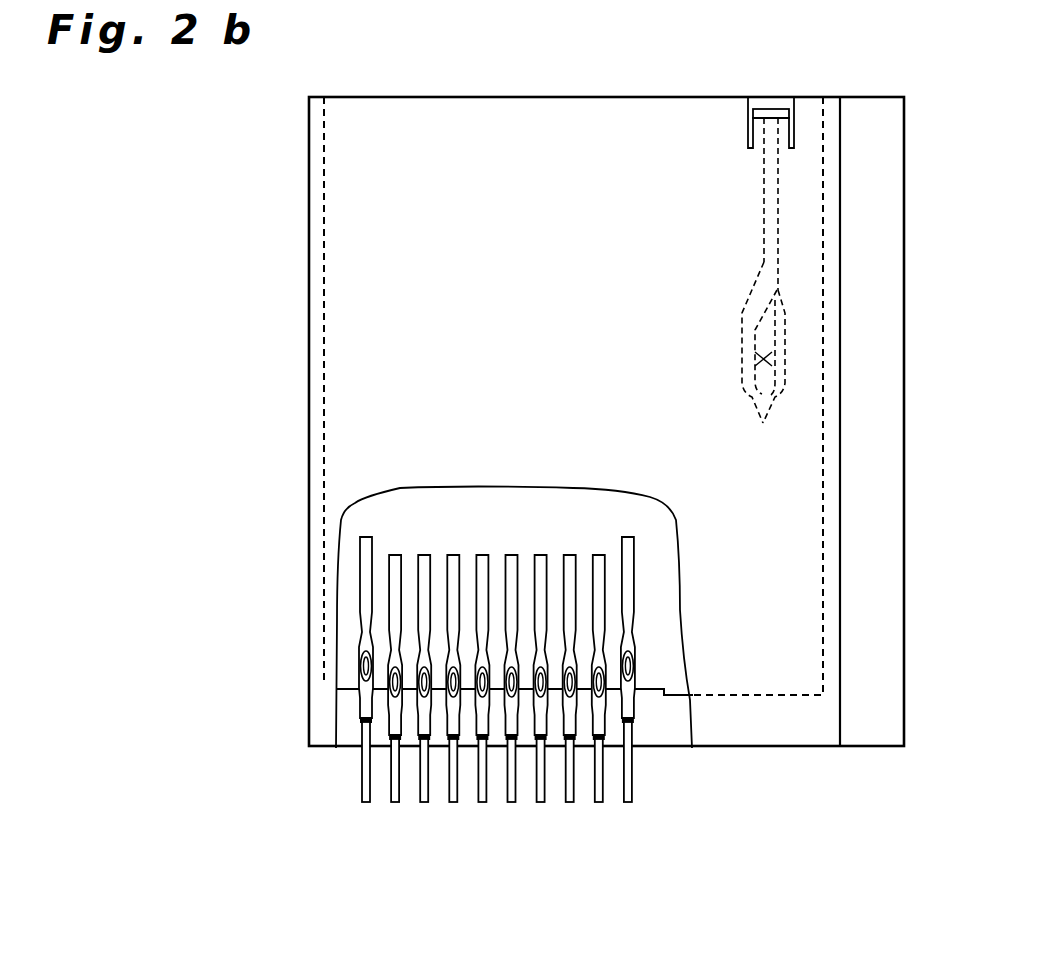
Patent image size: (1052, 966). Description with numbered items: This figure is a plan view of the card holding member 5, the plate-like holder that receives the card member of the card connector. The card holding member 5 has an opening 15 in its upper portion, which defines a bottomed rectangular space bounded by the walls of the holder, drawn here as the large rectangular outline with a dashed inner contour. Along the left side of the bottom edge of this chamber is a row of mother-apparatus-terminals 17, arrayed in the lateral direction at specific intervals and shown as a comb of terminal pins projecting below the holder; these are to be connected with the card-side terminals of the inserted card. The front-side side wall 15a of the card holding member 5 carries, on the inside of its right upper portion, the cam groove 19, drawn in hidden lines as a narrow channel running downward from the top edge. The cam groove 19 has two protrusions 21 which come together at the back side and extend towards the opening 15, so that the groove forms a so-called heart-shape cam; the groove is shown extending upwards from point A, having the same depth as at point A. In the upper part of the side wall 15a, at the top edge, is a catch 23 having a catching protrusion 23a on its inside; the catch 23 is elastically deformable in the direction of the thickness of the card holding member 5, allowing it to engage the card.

The card holding member 5 is at (884, 90).
The opening 15 is at (638, 118).
The side wall 15a is at (481, 118).
The mother-apparatus-terminals 17 is at (650, 800).
The cam groove 19 is at (752, 273).
The protrusions 21 is at (760, 379).
The catch 23 is at (763, 135).
The catching protrusion 23a is at (755, 112).
The point A is at (767, 263).